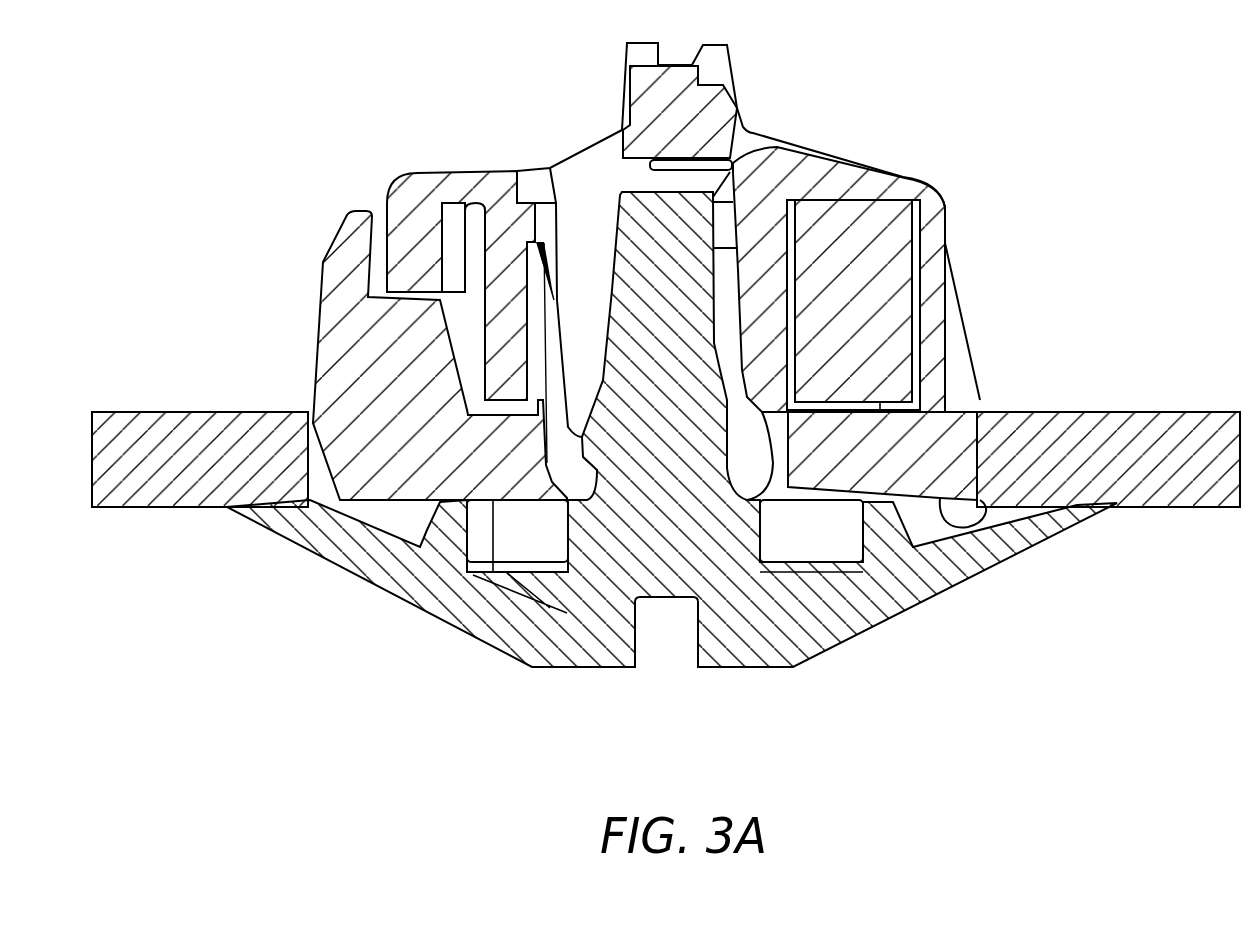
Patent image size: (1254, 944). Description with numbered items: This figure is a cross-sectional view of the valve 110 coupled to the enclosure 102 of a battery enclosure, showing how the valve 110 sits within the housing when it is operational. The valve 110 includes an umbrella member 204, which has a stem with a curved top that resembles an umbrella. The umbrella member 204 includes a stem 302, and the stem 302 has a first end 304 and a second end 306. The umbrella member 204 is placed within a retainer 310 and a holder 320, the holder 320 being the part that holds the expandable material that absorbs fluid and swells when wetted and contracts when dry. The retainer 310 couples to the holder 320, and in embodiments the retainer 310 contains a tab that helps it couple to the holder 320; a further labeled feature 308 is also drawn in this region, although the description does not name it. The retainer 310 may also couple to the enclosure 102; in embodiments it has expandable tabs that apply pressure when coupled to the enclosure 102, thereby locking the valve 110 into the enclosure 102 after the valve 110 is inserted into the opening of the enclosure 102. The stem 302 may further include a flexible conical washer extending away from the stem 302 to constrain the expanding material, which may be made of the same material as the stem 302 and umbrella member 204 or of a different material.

The valve 110 is at (192, 96).
The enclosure 102 is at (1140, 395).
The umbrella member 204 is at (937, 594).
The stem 302 is at (722, 310).
The first end 304 is at (763, 612).
The second end 306 is at (780, 147).
The pin 308 is at (532, 288).
The retainer 310 is at (322, 266).
The holder 320 is at (490, 298).